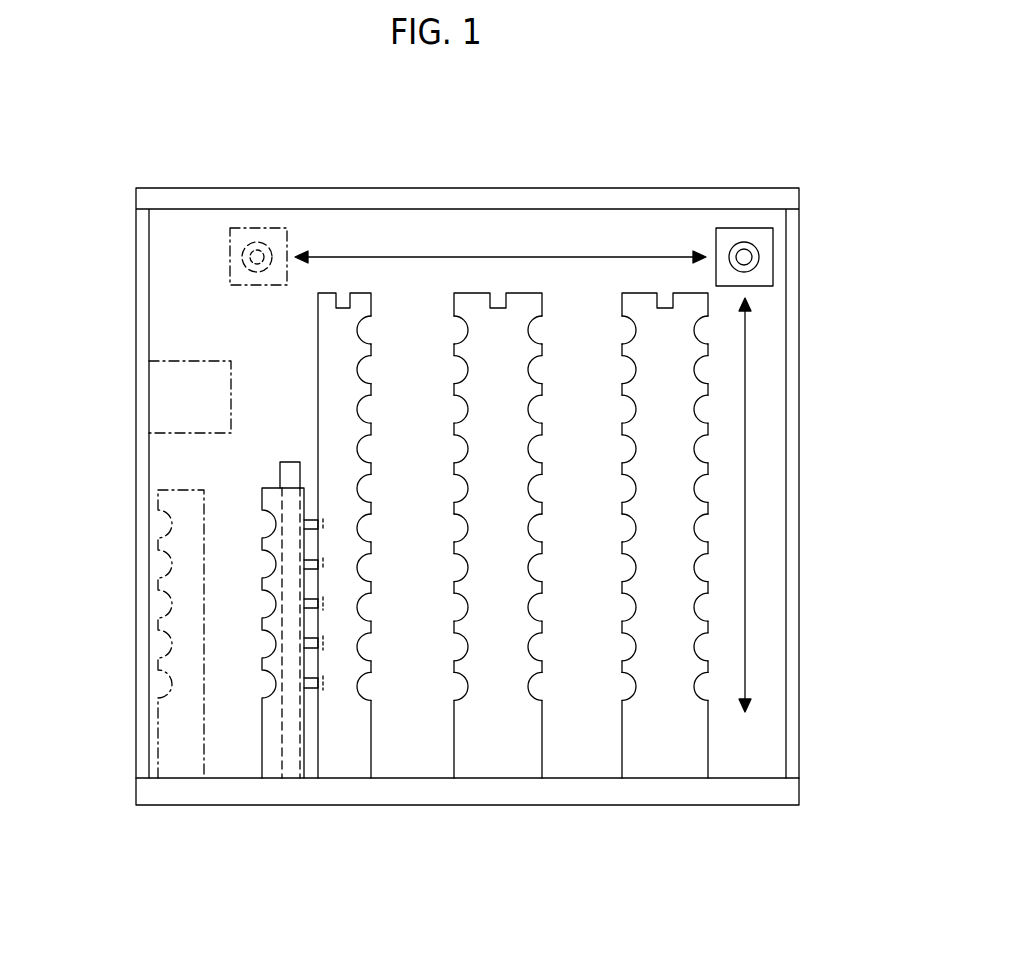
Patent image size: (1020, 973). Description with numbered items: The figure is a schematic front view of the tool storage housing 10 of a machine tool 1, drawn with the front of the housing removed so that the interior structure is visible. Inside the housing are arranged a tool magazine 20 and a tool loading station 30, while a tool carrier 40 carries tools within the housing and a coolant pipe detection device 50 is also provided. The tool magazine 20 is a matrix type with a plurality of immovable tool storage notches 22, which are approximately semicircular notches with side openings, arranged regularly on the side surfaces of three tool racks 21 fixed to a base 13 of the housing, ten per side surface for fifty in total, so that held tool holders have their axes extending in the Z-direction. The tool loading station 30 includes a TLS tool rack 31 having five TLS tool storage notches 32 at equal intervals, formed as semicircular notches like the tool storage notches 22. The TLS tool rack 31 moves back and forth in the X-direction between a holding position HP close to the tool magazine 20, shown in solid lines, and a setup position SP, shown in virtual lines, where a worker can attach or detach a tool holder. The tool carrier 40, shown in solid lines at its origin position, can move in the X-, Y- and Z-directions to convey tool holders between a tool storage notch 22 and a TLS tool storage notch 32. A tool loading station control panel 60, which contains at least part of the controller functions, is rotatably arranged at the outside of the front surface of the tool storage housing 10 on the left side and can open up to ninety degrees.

The machine tool 1 is at (517, 155).
The tool storage housing 10 is at (362, 179).
The base 13 is at (422, 795).
The tool magazine 20 is at (561, 308).
The tool rack 21 is at (328, 323).
The tool storage notch 22 is at (357, 333).
The tool loading station 30 is at (232, 752).
The TLS tool rack 31 is at (182, 770).
The TLS tool storage notch 32 is at (262, 525).
The tool carrier 40 is at (252, 225).
The coolant pipe detection device 50 is at (292, 465).
The tool loading station control panel 60 is at (175, 370).